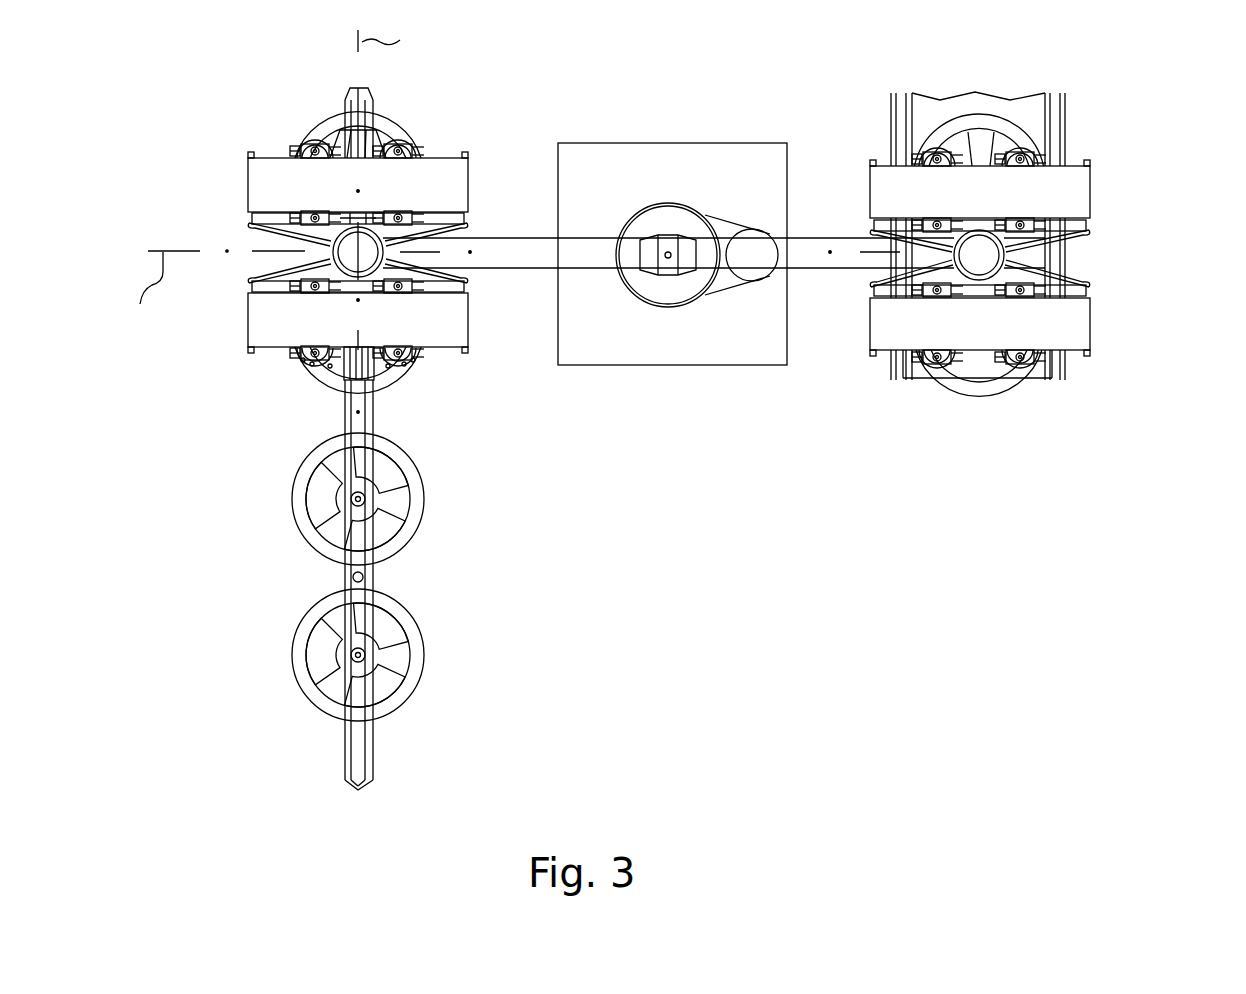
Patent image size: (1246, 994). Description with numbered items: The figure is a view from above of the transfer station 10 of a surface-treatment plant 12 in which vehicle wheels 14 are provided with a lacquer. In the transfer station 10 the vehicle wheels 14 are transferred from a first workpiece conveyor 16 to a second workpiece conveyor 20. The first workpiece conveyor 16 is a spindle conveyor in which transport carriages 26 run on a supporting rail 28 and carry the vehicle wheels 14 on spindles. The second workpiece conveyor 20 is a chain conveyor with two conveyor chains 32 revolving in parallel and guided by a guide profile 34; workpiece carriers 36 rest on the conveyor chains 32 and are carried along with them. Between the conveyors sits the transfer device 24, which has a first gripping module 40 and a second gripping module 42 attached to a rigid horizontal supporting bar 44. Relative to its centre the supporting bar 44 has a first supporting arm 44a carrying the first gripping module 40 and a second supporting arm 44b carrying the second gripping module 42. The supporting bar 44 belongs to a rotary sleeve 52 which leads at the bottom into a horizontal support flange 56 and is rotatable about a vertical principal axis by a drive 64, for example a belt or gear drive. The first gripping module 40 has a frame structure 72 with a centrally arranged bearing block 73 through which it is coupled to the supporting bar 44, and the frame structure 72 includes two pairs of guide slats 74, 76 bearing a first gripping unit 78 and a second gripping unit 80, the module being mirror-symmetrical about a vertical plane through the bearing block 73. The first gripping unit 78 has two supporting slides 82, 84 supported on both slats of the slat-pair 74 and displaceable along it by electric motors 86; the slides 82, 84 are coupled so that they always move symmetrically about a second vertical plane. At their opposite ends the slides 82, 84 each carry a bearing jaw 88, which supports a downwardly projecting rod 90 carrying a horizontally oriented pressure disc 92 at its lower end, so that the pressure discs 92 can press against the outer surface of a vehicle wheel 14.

The transfer station 10 is at (631, 410).
The surface-treatment plant 12 is at (549, 414).
The vehicle wheel 14 is at (330, 122).
The first workpiece conveyor 16 is at (378, 758).
The second workpiece conveyor 20 is at (1017, 205).
The transfer device 24 is at (702, 356).
The transport carriage 26 is at (372, 577).
The supporting rail 28 is at (348, 740).
The conveyor chain 32 is at (895, 105).
The guide profile 34 is at (912, 100).
The workpiece carrier 36 is at (1062, 250).
The first gripping module 40 is at (240, 185).
The second gripping module 42 is at (1092, 205).
The supporting bar 44 is at (714, 324).
The first supporting arm 44a is at (590, 260).
The second supporting arm 44b is at (828, 268).
The rotary sleeve 52 is at (672, 235).
The support flange 56 is at (668, 215).
The drive 64 is at (755, 230).
The frame structure 72 is at (480, 216).
The bearing block 73 is at (330, 247).
The slat-pair 74 is at (470, 296).
The slat-pair 76 is at (470, 200).
The first gripping unit 78 is at (380, 378).
The second gripping unit 80 is at (375, 135).
The supporting slide 82 is at (424, 353).
The supporting slide 84 is at (292, 353).
The electric motor 86 is at (300, 306).
The bearing jaw 88 is at (312, 362).
The rod 90 is at (300, 352).
The pressure disc 92 is at (330, 360).